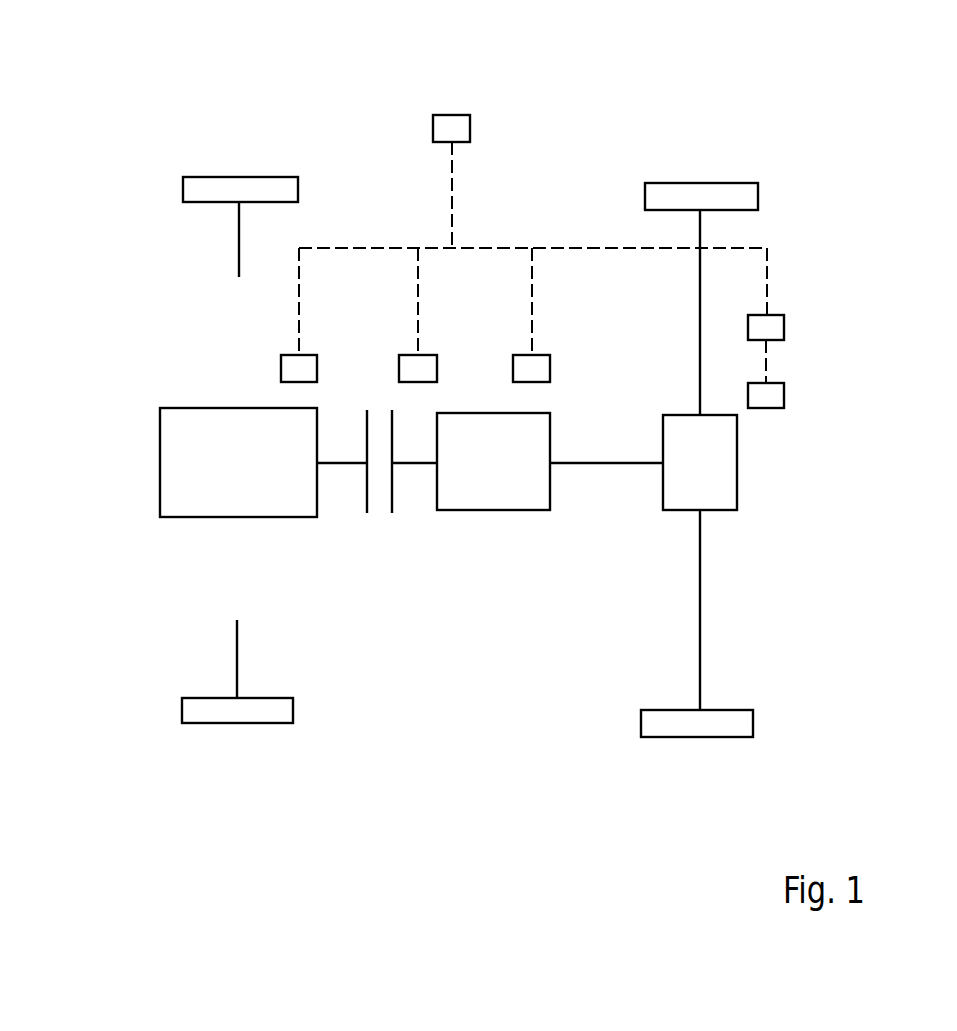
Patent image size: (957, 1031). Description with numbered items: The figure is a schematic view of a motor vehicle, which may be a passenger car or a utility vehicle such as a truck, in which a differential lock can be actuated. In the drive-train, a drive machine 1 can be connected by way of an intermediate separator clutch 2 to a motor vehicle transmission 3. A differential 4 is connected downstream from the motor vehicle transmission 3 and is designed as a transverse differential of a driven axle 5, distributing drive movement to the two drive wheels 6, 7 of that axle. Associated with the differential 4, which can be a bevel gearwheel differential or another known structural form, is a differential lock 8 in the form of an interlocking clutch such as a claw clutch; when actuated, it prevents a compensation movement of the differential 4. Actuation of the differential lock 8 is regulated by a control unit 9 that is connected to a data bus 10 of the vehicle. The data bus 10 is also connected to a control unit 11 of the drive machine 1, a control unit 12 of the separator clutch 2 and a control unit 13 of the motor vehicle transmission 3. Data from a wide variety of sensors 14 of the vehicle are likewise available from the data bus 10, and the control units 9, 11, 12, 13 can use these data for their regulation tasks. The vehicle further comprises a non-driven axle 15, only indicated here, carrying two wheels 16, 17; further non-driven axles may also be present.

The drive machine 1 is at (160, 462).
The separator clutch 2 is at (367, 490).
The motor vehicle transmission 3 is at (507, 510).
The differential 4 is at (737, 490).
The driven axle 5 is at (700, 612).
The drive wheel 6 is at (675, 737).
The drive wheel 7 is at (688, 183).
The differential lock 8 is at (784, 397).
The control unit 9 is at (784, 327).
The data bus 10 is at (578, 248).
The control unit of the drive machine 11 is at (280, 370).
The control unit of the separator clutch 12 is at (407, 355).
The control unit of the motor vehicle transmission 13 is at (518, 355).
The sensors 14 is at (442, 115).
The non-driven axle 15 is at (235, 652).
The wheel 16 is at (227, 723).
The wheel 17 is at (233, 177).